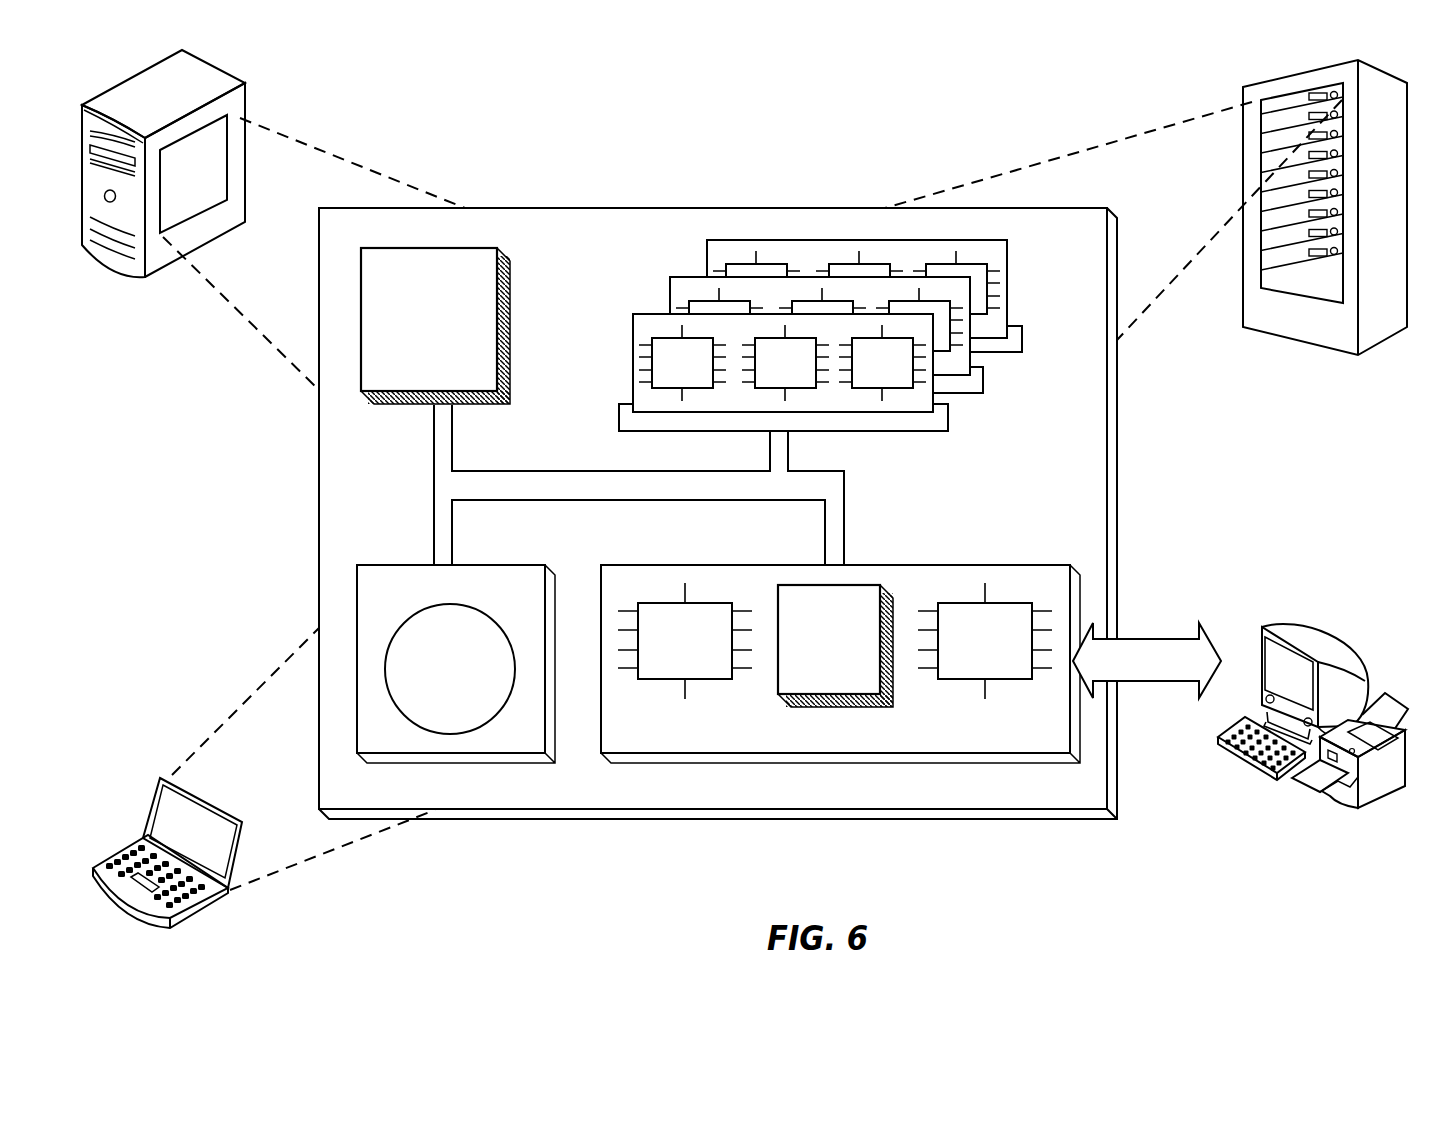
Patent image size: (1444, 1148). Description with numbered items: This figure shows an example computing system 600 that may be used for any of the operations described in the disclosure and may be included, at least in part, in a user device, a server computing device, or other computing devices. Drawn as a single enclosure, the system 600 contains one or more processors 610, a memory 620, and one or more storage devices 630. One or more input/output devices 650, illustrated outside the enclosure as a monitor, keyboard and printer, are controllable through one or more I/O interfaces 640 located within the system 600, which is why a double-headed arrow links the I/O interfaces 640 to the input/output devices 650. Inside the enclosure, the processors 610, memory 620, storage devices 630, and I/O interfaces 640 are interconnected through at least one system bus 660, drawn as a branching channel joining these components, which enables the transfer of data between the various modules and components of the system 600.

The system 600 is at (529, 122).
The processor 610 is at (488, 385).
The memory 620 is at (1013, 386).
The storage device 630 is at (534, 744).
The I/O interface 640 is at (953, 742).
The input/output device 650 is at (1257, 631).
The system bus 660 is at (633, 492).